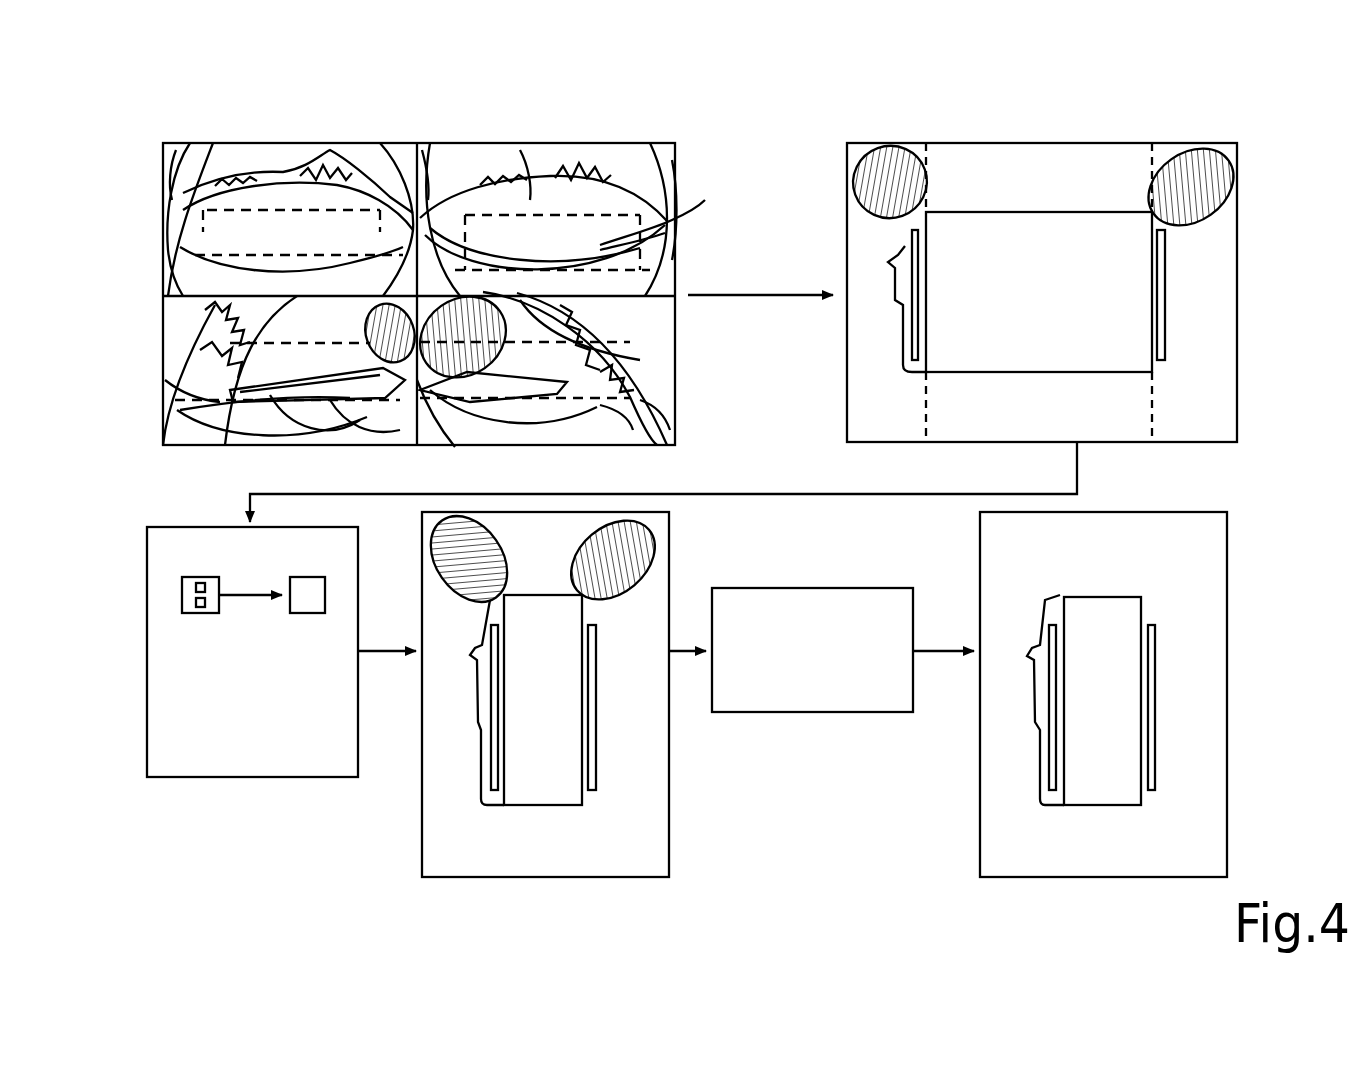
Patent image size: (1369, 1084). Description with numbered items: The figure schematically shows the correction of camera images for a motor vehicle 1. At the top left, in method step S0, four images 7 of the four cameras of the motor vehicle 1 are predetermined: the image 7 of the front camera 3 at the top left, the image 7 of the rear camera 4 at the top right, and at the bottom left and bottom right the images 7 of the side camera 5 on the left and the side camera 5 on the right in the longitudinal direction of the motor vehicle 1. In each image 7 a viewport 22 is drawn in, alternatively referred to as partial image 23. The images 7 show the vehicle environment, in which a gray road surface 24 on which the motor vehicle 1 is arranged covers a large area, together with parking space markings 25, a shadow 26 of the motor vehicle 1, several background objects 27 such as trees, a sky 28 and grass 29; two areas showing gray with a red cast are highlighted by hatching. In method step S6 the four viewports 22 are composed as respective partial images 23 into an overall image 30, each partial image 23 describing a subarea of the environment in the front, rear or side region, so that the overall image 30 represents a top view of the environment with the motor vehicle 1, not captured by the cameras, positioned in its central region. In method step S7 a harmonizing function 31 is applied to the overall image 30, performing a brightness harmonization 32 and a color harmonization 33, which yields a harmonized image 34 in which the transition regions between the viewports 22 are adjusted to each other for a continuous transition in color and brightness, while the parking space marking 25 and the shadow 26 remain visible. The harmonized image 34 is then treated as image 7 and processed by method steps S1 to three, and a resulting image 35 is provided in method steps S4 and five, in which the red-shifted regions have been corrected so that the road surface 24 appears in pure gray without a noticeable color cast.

The motor vehicle 1 is at (200, 448).
The front camera 3 is at (246, 138).
The rear camera 4 is at (463, 138).
The side camera 5 is at (370, 443).
The image 7 is at (298, 143).
The viewport 22 is at (382, 143).
The partial image 23 is at (1103, 156).
The road surface 24 is at (188, 143).
The parking space marking 25 is at (660, 257).
The shadow 26 is at (420, 425).
The background object 27 is at (330, 143).
The sky 28 is at (213, 143).
The grass 29 is at (610, 240).
The overall image 30 is at (1203, 130).
The harmonizing function 31 is at (182, 593).
The brightness harmonization 32 is at (197, 580).
The color harmonization 33 is at (183, 603).
The harmonized image 34 is at (652, 865).
The resulting image 35 is at (982, 873).
The method step S0 is at (163, 173).
The method step S1 is at (860, 540).
The method step S4 is at (1227, 630).
The method step S6 is at (1045, 143).
The method step S7 is at (147, 663).